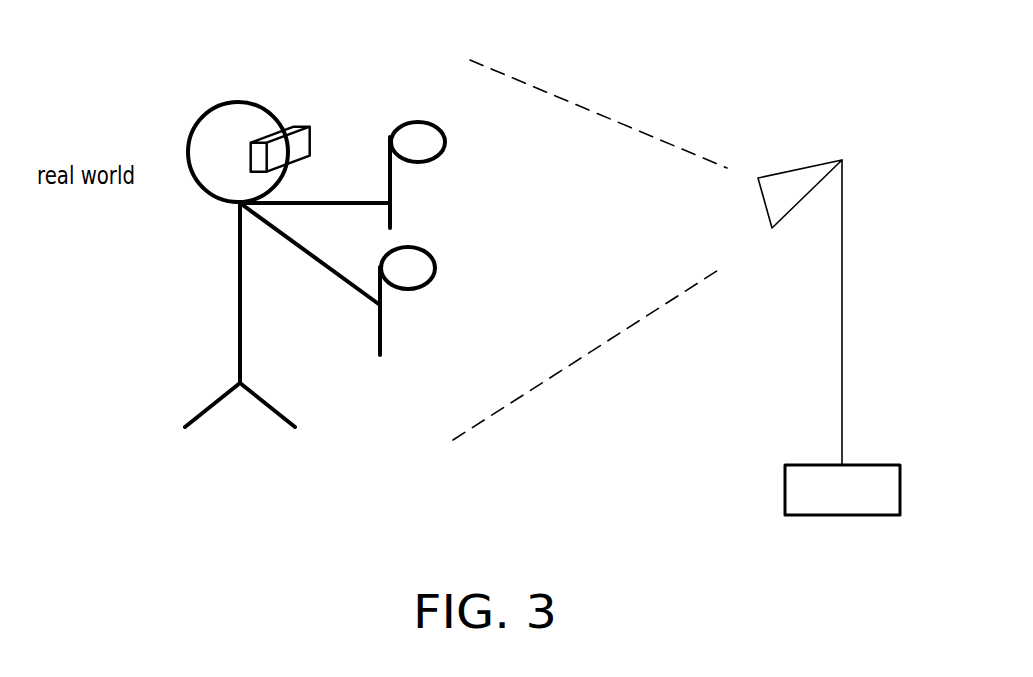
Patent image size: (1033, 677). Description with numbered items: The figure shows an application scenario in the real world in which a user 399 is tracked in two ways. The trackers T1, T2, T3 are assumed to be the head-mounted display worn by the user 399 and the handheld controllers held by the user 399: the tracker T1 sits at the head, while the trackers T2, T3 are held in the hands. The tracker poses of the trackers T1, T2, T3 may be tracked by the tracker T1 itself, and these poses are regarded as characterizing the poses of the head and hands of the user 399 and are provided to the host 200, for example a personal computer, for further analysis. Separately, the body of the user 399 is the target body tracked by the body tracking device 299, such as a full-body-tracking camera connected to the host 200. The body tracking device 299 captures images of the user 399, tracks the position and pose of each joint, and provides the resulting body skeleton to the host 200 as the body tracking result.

The user 399 is at (238, 100).
The tracker T1 is at (303, 125).
The tracker T2 is at (415, 290).
The tracker T3 is at (418, 122).
The body tracking device 299 is at (842, 160).
The host 200 is at (873, 465).